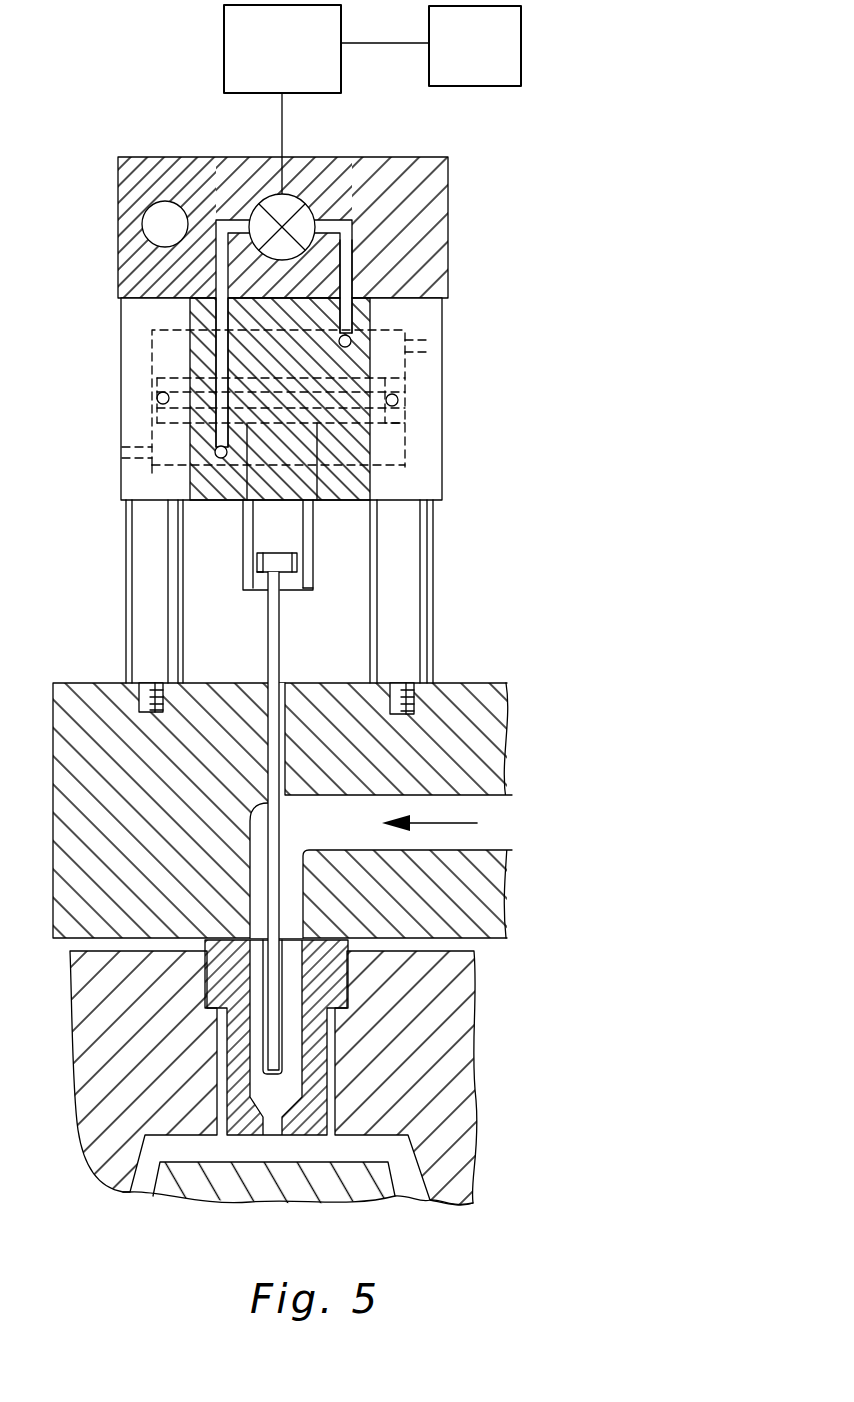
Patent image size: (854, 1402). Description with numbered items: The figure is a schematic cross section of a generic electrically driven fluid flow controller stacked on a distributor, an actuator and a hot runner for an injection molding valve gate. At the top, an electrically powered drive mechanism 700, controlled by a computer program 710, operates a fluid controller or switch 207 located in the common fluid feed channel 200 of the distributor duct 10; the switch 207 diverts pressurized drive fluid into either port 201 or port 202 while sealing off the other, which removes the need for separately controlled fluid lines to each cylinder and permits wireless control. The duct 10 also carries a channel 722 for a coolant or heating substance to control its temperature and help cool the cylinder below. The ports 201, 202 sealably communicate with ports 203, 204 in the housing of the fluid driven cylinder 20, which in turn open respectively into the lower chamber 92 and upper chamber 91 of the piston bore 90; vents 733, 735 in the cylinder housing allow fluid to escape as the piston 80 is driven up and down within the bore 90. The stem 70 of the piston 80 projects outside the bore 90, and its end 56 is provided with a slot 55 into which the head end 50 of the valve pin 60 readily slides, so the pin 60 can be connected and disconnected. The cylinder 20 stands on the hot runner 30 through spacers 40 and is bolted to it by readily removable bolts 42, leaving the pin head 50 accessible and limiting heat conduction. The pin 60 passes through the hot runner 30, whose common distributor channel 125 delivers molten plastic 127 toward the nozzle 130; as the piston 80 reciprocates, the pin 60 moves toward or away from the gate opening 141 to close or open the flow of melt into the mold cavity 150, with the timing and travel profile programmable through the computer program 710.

The electrically powered drive mechanism 700 is at (262, 62).
The computer program 710 is at (456, 60).
The distributor duct 10 is at (452, 200).
The channel 722 is at (145, 222).
The common fluid feed channel 200 is at (313, 213).
The fluid controller or switch 207 is at (258, 218).
The port 201 is at (218, 275).
The port 202 is at (350, 277).
The port 203 is at (220, 310).
The port 204 is at (343, 322).
The fluid driven cylinder 20 is at (447, 457).
The upper chamber 91 is at (160, 335).
The piston bore 90 is at (408, 363).
The vent 735 is at (430, 348).
The vent 733 is at (150, 450).
The cylinder piston 80 is at (413, 417).
The lower chamber 92 is at (153, 468).
The spacer 40 is at (434, 565).
The piston stem 70 is at (253, 527).
The head end 50 is at (294, 562).
The slot 55 is at (263, 573).
The end of the stem 56 is at (313, 584).
The bolt 42 is at (140, 698).
The hot runner 30 is at (484, 680).
The common distributor channel 125 is at (388, 805).
The molten plastic 127 is at (470, 823).
The valve pin 60 is at (273, 740).
The nozzle 130 is at (345, 988).
The gate opening 141 is at (276, 1145).
The mold cavity 150 is at (142, 1163).